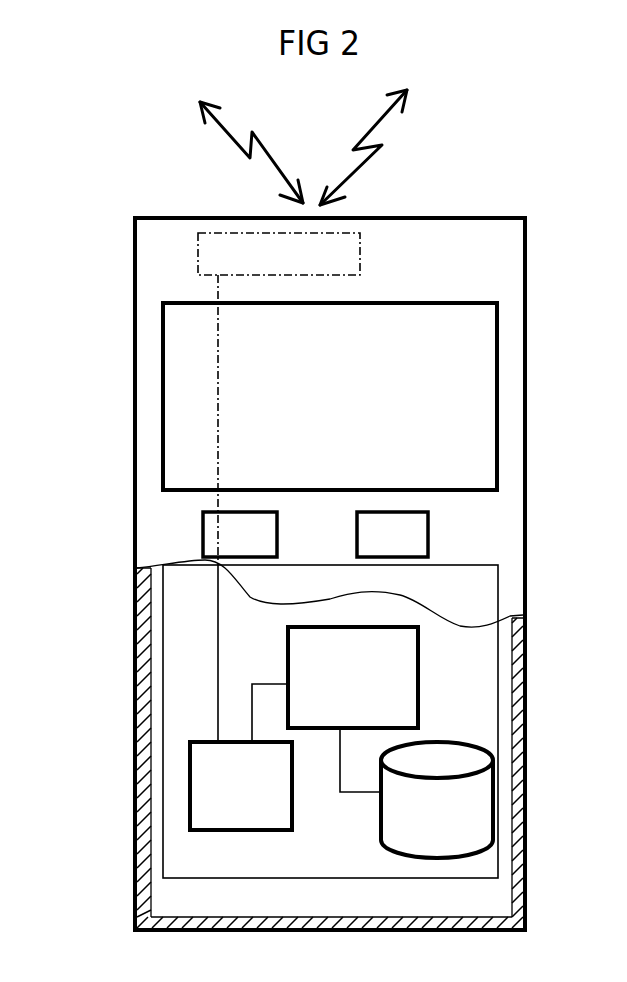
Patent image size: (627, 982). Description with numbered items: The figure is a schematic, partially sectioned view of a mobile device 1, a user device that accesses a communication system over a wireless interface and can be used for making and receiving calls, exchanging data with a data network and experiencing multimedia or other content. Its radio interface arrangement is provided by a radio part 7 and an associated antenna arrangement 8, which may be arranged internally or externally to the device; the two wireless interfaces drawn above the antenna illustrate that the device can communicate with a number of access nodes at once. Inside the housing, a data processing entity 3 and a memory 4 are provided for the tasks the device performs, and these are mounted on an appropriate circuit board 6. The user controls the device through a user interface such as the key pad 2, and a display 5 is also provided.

The mobile device 1 is at (135, 332).
The key pad 2 is at (203, 534).
The data processing entity 3 is at (420, 662).
The memory 4 is at (493, 785).
The display 5 is at (175, 405).
The circuit board 6 is at (178, 860).
The radio part 7 is at (190, 760).
The antenna arrangement 8 is at (370, 247).